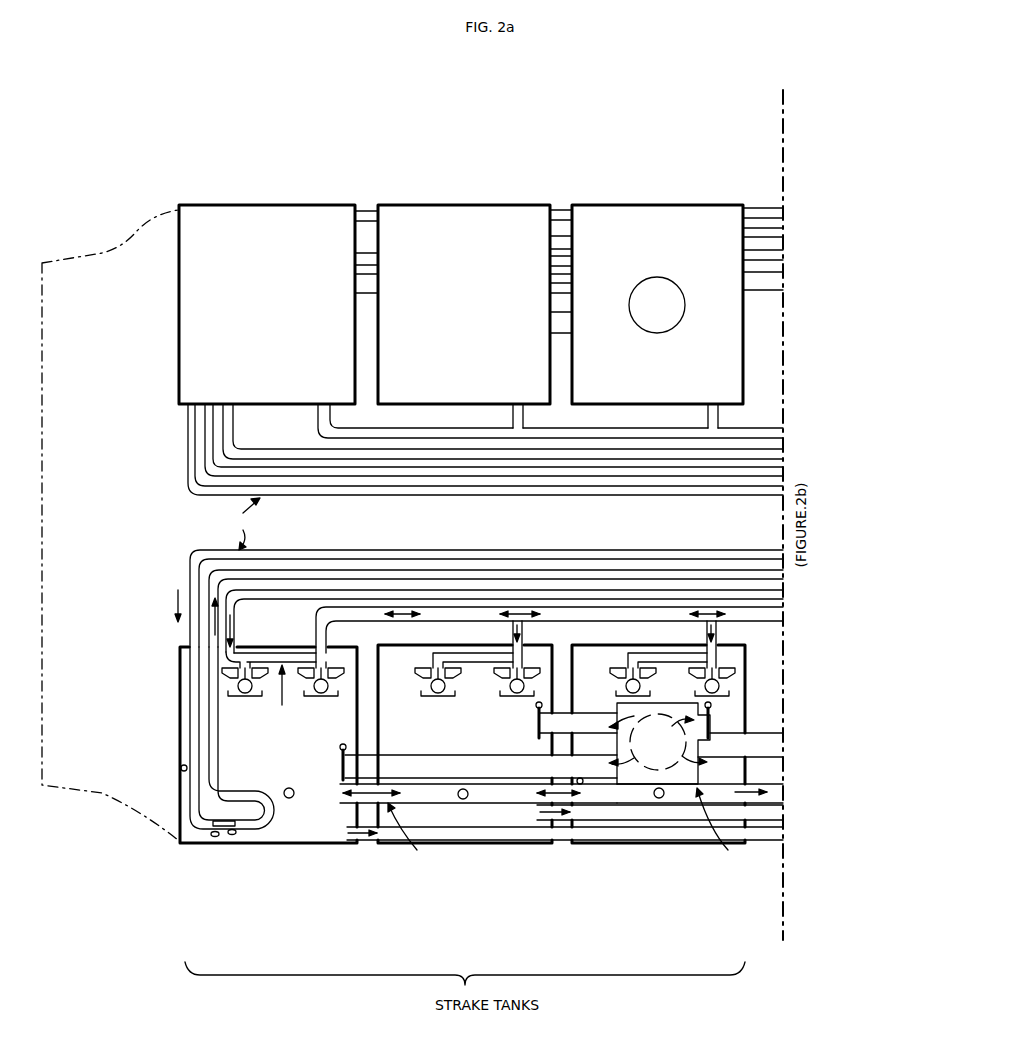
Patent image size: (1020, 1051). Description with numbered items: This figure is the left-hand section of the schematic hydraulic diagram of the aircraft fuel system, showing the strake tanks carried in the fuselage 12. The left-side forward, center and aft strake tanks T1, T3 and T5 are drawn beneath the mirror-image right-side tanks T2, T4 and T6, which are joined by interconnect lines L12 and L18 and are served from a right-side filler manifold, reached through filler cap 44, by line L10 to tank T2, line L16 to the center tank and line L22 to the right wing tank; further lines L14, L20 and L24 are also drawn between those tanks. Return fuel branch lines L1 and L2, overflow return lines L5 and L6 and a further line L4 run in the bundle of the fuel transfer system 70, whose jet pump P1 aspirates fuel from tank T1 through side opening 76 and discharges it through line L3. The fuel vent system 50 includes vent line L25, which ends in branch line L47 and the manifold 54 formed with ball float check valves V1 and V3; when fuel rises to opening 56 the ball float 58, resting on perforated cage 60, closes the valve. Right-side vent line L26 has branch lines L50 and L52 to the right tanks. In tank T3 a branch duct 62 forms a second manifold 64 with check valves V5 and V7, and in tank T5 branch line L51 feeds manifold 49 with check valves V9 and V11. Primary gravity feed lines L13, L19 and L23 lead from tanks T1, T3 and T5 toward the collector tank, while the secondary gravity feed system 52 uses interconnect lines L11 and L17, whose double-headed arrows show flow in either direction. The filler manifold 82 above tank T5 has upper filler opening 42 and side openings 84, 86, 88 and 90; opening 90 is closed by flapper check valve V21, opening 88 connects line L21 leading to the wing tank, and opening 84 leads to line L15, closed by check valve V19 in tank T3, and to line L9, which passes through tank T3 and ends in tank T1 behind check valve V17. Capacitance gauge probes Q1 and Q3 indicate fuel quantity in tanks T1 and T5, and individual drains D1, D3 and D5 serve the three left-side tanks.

The fuselage 12 is at (131, 217).
The forward strake tank T2 is at (265, 205).
The center strake tank T4 is at (426, 205).
The aft strake tank T6 is at (616, 205).
The forward strake tank T1 is at (280, 844).
The center strake tank T3 is at (500, 845).
The aft strake tank T5 is at (644, 845).
The filler cap 44 is at (666, 277).
The line L14 is at (362, 211).
The interconnect line L12 is at (360, 259).
The line L10 is at (360, 287).
The line L20 is at (557, 239).
The interconnect line L18 is at (557, 258).
The line L16 is at (557, 322).
The line L24 is at (768, 257).
The line L22 is at (770, 287).
The branch line L50 is at (527, 423).
The branch line L52 is at (723, 424).
The fuel vent line L26 is at (783, 430).
The fuel return branch line L2 is at (630, 497).
The line L4 is at (521, 472).
The overflow return line L6 is at (445, 452).
The fuel transfer system 70 is at (240, 524).
The fuel return branch line L1 is at (682, 553).
The jet pump discharge line L3 is at (558, 576).
The overflow return line L5 is at (443, 593).
The vent line L25 is at (783, 614).
The fuel vent system 50 is at (818, 638).
The branch line L47 is at (298, 655).
The opening 56 is at (240, 661).
The ball float 58 is at (246, 686).
The ball float check valve V1 is at (232, 700).
The manifold 54 is at (282, 693).
The perforated cage 60 is at (258, 705).
The ball float check valve V3 is at (332, 698).
The capacitance gauge Q1 is at (182, 764).
The jet pump P1 is at (212, 832).
The side opening 76 is at (232, 835).
The fuel tank drain D1 is at (291, 788).
The flapper check valve V17 is at (340, 762).
The line L9 is at (400, 768).
The interconnect line L11 is at (355, 796).
The gravity feed line L13 is at (365, 842).
The secondary gravity feed system 52 is at (409, 834).
The branch duct 62 is at (510, 628).
The second manifold 64 is at (482, 664).
The ball float check valve V5 is at (432, 690).
The ball float check valve V7 is at (506, 684).
The flapper check valve V19 is at (536, 734).
The line L15 is at (541, 720).
The sensor D3 is at (458, 797).
The interconnect line L17 is at (553, 782).
The capacitance gauge Q3 is at (584, 781).
The gravity feed line L19 is at (783, 813).
The branch line L51 is at (719, 641).
The manifold 49 is at (665, 654).
The ball float check valve V9 is at (620, 669).
The ball float check valve V11 is at (730, 691).
The filler opening 42 is at (640, 768).
The side opening 84 is at (616, 718).
The side opening 86 is at (616, 762).
The flapper check valve V21 is at (713, 724).
The side opening 90 is at (714, 728).
The side opening 88 is at (708, 757).
The line L21 is at (783, 762).
The gravity feed line L23 is at (783, 792).
The sensor D5 is at (660, 800).
The filler manifold 82 is at (716, 827).